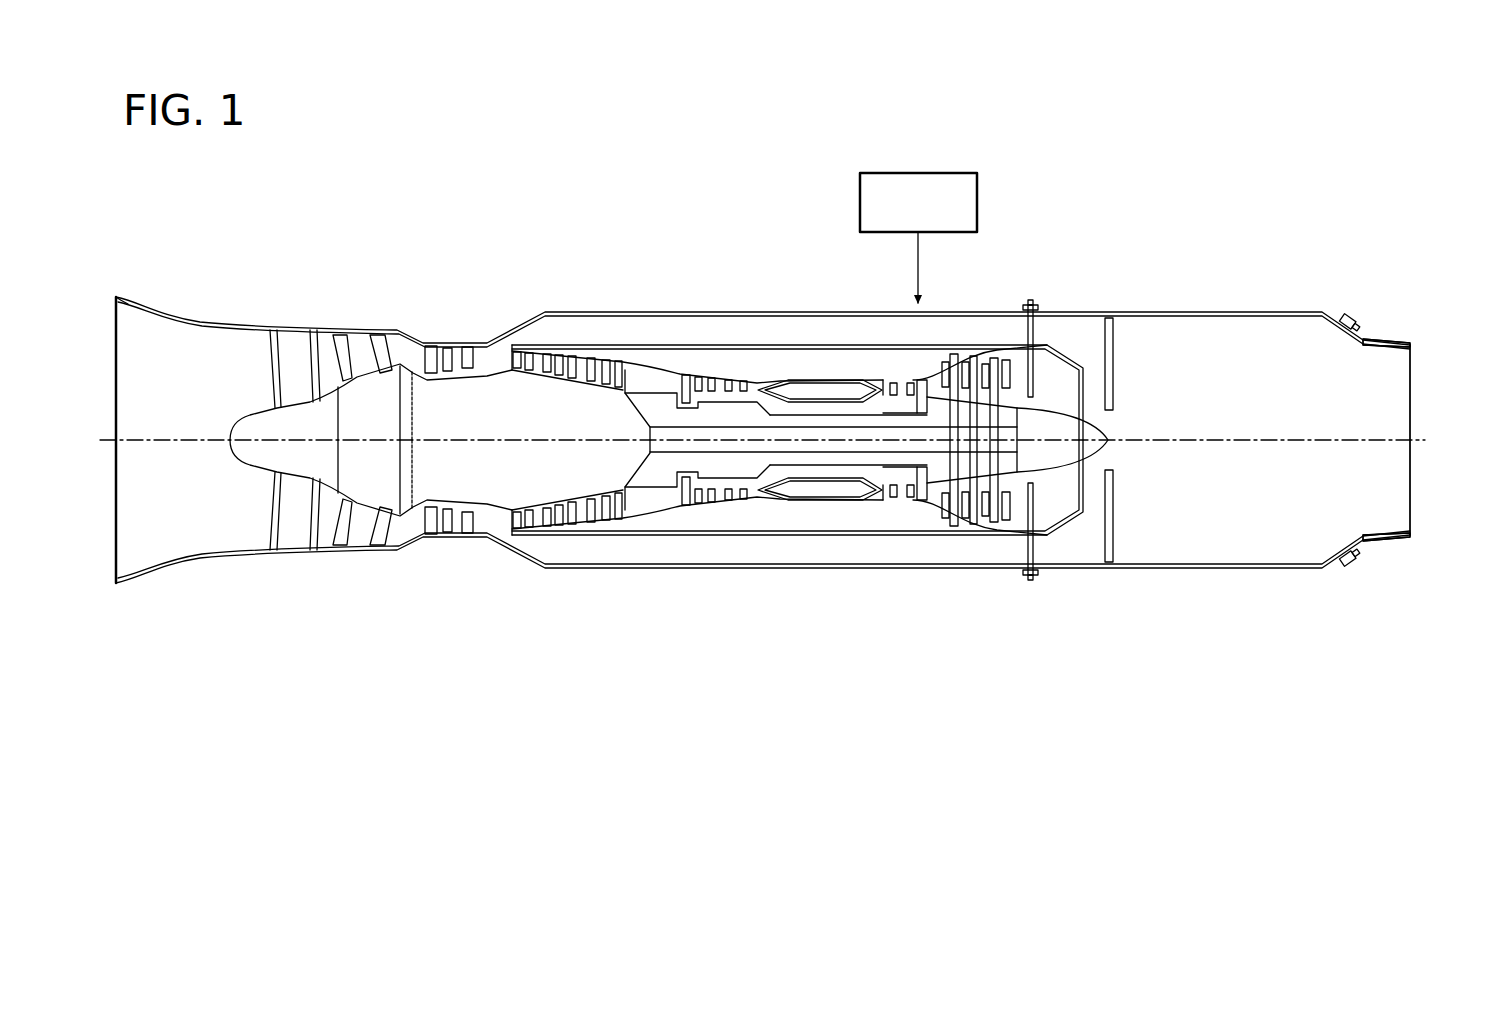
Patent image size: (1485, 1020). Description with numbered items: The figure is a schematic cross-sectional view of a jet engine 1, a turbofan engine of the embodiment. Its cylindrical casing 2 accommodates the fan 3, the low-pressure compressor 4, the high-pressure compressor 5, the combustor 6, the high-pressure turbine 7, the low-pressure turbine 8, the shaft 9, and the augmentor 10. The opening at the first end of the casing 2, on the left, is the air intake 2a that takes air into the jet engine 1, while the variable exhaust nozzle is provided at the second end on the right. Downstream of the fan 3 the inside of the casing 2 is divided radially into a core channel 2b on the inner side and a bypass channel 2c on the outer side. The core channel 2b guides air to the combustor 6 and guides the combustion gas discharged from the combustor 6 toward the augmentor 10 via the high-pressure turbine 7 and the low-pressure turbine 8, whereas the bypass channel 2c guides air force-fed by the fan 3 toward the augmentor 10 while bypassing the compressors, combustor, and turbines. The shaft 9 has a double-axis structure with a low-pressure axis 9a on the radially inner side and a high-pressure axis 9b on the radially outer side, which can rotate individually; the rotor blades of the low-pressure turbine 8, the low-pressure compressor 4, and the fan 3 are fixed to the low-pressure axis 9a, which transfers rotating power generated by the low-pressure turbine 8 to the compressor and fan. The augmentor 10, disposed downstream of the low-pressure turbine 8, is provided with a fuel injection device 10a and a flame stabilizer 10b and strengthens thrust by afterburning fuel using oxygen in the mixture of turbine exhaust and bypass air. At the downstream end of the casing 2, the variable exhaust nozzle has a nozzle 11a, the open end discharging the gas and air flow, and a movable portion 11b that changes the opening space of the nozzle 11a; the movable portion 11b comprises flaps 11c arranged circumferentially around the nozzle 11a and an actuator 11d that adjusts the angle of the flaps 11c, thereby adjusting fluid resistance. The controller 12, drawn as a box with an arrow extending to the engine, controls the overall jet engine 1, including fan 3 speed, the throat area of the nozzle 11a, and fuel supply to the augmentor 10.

The jet engine 1 is at (1100, 188).
The casing 2 is at (693, 311).
The air intake 2a is at (112, 313).
The core channel 2b is at (657, 374).
The bypass channel 2c is at (579, 330).
The fan 3 is at (428, 321).
The low-pressure compressor 4 is at (620, 345).
The high-pressure compressor 5 is at (748, 371).
The combustor 6 is at (840, 370).
The high-pressure turbine 7 is at (925, 364).
The low-pressure turbine 8 is at (968, 354).
The shaft 9 is at (890, 612).
The low-pressure axis 9a is at (832, 445).
The high-pressure axis 9b is at (868, 464).
The augmentor 10 is at (1074, 306).
The fuel injection device 10a is at (1034, 333).
The flame stabilizer 10b is at (1115, 352).
The nozzle 11a is at (1412, 362).
The movable portion 11b is at (1381, 281).
The flaps 11c is at (1393, 337).
The actuator 11d is at (1350, 312).
The controller 12 is at (948, 190).